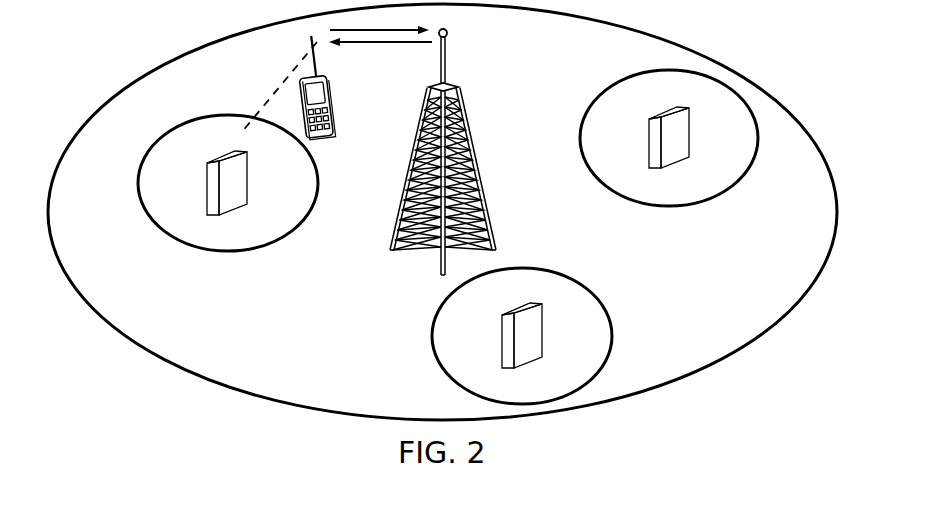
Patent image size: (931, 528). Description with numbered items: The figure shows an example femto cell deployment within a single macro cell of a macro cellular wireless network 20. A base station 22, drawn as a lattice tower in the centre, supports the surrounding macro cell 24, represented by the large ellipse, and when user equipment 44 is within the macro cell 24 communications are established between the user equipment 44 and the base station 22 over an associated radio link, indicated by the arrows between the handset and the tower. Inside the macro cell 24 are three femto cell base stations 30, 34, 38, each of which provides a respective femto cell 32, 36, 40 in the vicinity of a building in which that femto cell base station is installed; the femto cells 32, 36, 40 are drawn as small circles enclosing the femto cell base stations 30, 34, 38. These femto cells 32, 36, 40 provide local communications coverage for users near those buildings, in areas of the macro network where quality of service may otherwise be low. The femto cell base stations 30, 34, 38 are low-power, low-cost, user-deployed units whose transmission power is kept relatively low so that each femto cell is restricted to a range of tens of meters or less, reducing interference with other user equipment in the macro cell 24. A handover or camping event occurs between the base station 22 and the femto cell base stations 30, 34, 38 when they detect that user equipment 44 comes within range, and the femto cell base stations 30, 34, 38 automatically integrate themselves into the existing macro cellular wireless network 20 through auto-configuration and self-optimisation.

The macro cellular wireless network 20 is at (93, 74).
The base station 22 is at (484, 178).
The macro cell 24 is at (228, 388).
The femto cell base station 30 is at (233, 192).
The femto cell 32 is at (228, 253).
The femto cell base station 34 is at (527, 347).
The femto cell 36 is at (432, 338).
The femto cell base station 38 is at (677, 150).
The femto cell 40 is at (582, 138).
The user equipment 44 is at (332, 108).